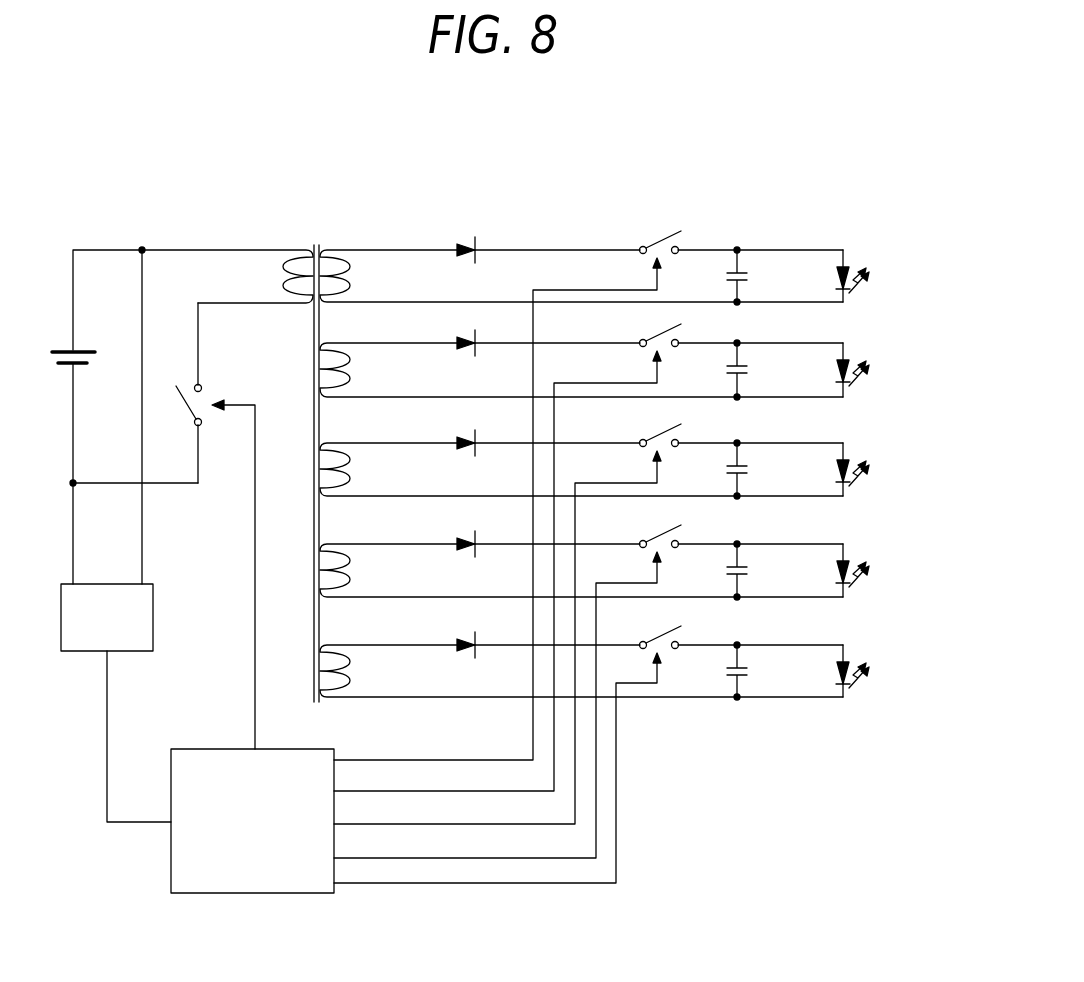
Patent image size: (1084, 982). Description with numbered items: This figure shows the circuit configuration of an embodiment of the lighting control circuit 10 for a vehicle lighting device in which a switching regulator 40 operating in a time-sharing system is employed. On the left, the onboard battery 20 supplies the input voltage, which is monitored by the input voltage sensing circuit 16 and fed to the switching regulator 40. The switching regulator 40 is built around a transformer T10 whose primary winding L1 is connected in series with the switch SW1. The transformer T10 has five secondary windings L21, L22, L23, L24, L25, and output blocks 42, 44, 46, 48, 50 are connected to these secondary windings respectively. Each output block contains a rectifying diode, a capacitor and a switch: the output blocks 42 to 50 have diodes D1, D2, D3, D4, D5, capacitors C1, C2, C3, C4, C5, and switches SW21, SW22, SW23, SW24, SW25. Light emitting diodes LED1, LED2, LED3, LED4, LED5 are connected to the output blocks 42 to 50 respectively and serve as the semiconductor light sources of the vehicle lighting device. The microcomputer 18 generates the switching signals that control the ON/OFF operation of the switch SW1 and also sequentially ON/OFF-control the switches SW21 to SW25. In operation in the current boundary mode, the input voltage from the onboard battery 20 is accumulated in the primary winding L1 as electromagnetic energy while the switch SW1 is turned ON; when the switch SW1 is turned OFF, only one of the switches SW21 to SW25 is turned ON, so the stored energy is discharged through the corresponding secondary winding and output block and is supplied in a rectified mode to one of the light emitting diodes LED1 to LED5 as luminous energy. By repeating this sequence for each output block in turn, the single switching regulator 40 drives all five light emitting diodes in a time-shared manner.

The lighting control circuit 10 is at (561, 178).
The input voltage sensing circuit 16 is at (153, 597).
The microcomputer 18 is at (250, 893).
The onboard battery 20 is at (82, 351).
The switching regulator 40 is at (372, 232).
The output block 42 is at (802, 234).
The output block 44 is at (802, 328).
The output block 46 is at (802, 428).
The output block 48 is at (802, 529).
The output block 50 is at (802, 630).
The transformer T10 is at (318, 458).
The primary winding L1 is at (227, 276).
The switch SW1 is at (220, 526).
The secondary winding L21 is at (581, 276).
The secondary winding L22 is at (581, 370).
The secondary winding L23 is at (581, 469).
The secondary winding L24 is at (581, 570).
The secondary winding L25 is at (581, 671).
The diode D1 is at (466, 267).
The diode D2 is at (466, 360).
The diode D3 is at (466, 460).
The diode D4 is at (466, 561).
The diode D5 is at (466, 662).
The switch SW21 is at (588, 495).
The switch SW22 is at (588, 557).
The switch SW23 is at (588, 624).
The switch SW24 is at (588, 691).
The switch SW25 is at (588, 754).
The capacitor C1 is at (759, 276).
The capacitor C2 is at (759, 370).
The capacitor C3 is at (759, 469).
The capacitor C4 is at (759, 570).
The capacitor C5 is at (759, 671).
The light emitting diode LED1 is at (890, 276).
The light emitting diode LED2 is at (890, 370).
The light emitting diode LED3 is at (890, 469).
The light emitting diode LED4 is at (890, 570).
The light emitting diode LED5 is at (890, 671).